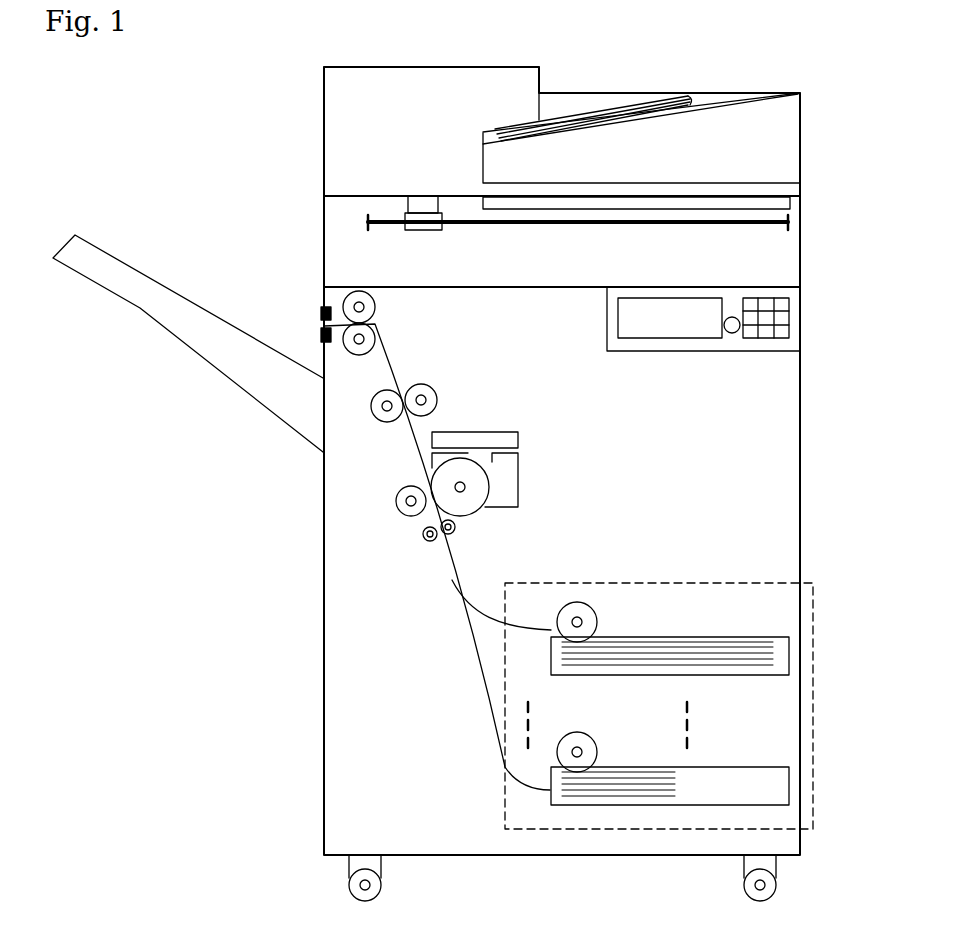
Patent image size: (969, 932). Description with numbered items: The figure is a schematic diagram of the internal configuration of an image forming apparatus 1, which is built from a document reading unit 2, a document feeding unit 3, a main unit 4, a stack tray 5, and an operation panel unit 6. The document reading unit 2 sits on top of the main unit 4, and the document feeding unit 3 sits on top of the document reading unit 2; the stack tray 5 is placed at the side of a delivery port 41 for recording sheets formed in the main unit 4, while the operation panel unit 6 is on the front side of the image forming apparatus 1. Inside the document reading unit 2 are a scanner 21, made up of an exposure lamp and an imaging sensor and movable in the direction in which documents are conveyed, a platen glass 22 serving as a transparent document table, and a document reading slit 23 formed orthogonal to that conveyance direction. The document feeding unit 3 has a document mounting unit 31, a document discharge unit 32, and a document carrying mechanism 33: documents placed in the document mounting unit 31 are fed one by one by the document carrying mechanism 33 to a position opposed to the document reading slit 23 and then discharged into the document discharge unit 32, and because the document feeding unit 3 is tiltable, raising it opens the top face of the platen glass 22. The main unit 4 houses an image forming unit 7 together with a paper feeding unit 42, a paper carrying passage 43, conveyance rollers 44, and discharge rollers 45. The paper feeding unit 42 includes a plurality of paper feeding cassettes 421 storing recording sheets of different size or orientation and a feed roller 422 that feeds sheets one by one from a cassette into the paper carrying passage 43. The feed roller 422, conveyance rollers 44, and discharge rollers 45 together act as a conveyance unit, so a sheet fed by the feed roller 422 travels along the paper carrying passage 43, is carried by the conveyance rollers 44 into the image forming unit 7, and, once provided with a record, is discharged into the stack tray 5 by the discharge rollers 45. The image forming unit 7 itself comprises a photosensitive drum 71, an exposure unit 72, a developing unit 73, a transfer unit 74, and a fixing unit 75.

The image forming apparatus 1 is at (253, 90).
The document reading unit 2 is at (310, 232).
The document feeding unit 3 is at (310, 133).
The main unit 4 is at (816, 543).
The stack tray 5 is at (208, 378).
The operation panel unit 6 is at (795, 305).
The image forming unit 7 is at (603, 440).
The scanner 21 is at (427, 232).
The platen glass 22 is at (782, 203).
The document reading slit 23 is at (425, 202).
The document mounting unit 31 is at (701, 108).
The document discharge unit 32 is at (668, 182).
The document carrying mechanism 33 is at (433, 72).
The delivery port 41 is at (321, 321).
The paper feeding unit 42 is at (813, 638).
The paper carrying passage 43 is at (432, 543).
The conveyance rollers 44 is at (422, 532).
The discharge rollers 45 is at (376, 307).
The photosensitive drum 71 is at (471, 515).
The exposure unit 72 is at (519, 437).
The developing unit 73 is at (519, 474).
The transfer unit 74 is at (397, 498).
The fixing unit 75 is at (438, 396).
The paper feeding cassettes 421 is at (718, 635).
The feed roller 422 is at (600, 623).